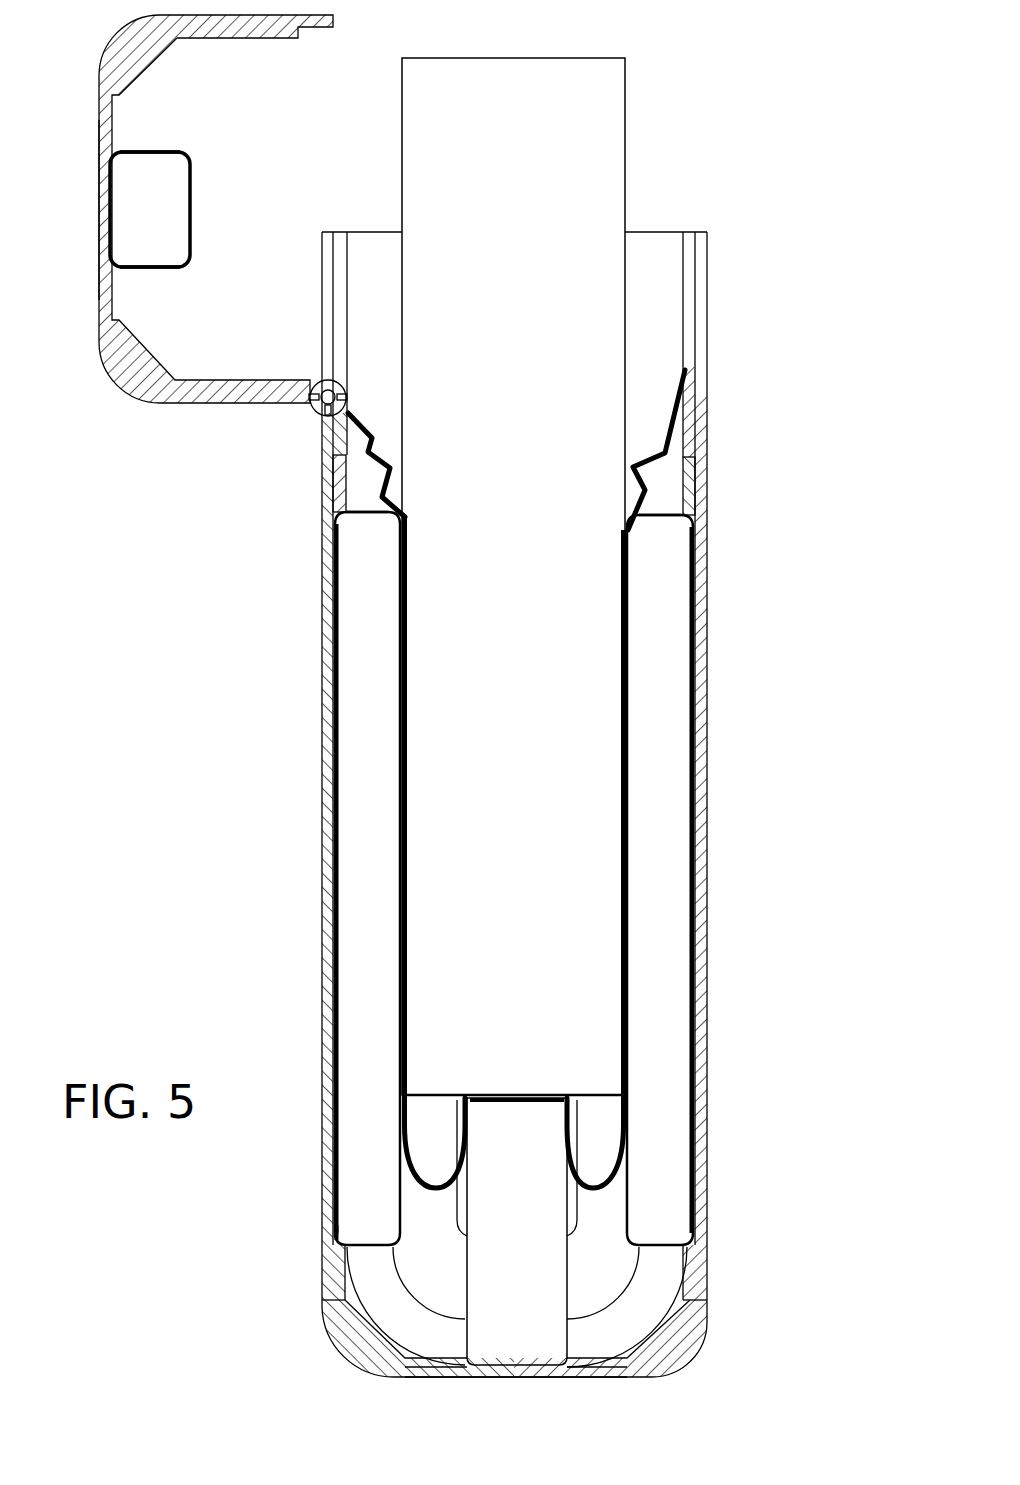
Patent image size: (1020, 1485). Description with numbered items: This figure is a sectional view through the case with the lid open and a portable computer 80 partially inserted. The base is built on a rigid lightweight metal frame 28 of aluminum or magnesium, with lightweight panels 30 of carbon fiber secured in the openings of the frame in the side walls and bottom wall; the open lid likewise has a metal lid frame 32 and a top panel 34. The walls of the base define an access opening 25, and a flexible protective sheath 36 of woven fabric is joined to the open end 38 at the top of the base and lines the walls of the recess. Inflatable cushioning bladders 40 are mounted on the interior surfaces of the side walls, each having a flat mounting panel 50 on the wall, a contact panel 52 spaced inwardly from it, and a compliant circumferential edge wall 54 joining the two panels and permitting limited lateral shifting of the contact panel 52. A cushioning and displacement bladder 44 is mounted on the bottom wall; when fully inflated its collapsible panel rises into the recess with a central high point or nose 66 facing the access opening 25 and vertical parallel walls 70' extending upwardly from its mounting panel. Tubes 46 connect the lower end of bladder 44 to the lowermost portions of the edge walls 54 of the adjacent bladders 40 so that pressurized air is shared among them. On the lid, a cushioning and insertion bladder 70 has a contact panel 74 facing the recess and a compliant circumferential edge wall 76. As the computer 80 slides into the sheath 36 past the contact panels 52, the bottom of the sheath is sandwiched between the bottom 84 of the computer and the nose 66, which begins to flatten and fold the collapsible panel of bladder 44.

The access opening 25 is at (666, 232).
The metal frame 28 is at (348, 1340).
The lightweight panels 30 is at (706, 735).
The lid frame 32 is at (118, 385).
The top panel 34 is at (104, 206).
The protective sheath 36 is at (342, 455).
The open end 38 is at (704, 412).
The cushioning bladders 40 is at (333, 1240).
The cushioning and displacement bladder 44 is at (575, 1267).
The tubes 46 is at (415, 1320).
The mounting panel 50 is at (330, 788).
The contact panel 52 is at (403, 885).
The circumferential edge wall 54 is at (365, 510).
The nose 66 is at (518, 1103).
The cushioning and insertion bladders 70 is at (168, 117).
The vertical parallel walls 70' is at (406, 1305).
The contact panel 74 is at (192, 205).
The circumferential edge wall 76 is at (150, 267).
The portable computer 80 is at (627, 127).
The bottom of the computer 84 is at (440, 1098).